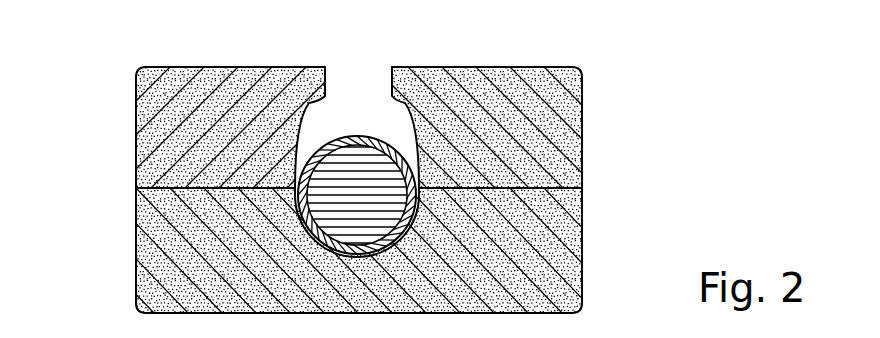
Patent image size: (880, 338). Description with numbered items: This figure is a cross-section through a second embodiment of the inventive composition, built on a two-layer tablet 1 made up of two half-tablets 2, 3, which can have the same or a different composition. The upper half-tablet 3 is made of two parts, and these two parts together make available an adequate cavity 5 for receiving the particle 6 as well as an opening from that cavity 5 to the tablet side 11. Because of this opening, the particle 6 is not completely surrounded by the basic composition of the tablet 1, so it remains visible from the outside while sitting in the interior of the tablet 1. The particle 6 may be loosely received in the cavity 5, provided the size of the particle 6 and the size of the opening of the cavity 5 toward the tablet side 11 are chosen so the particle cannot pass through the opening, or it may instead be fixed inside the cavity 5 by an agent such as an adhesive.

The tablet 1 is at (110, 153).
The half-tablet 2 is at (547, 153).
The upper half-tablet 3 is at (558, 247).
The cavity 5 is at (307, 121).
The particle 6 is at (375, 128).
The tablet side 11 is at (489, 66).